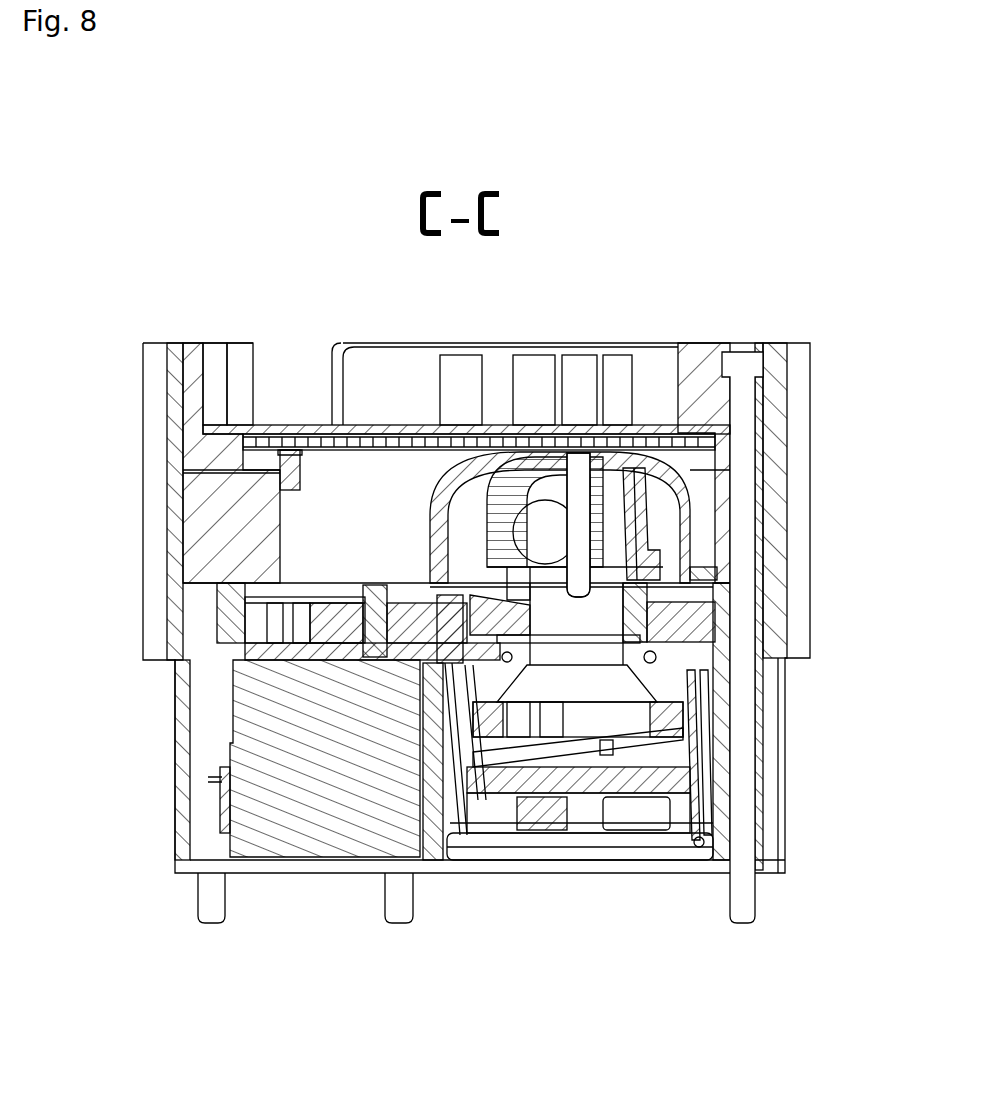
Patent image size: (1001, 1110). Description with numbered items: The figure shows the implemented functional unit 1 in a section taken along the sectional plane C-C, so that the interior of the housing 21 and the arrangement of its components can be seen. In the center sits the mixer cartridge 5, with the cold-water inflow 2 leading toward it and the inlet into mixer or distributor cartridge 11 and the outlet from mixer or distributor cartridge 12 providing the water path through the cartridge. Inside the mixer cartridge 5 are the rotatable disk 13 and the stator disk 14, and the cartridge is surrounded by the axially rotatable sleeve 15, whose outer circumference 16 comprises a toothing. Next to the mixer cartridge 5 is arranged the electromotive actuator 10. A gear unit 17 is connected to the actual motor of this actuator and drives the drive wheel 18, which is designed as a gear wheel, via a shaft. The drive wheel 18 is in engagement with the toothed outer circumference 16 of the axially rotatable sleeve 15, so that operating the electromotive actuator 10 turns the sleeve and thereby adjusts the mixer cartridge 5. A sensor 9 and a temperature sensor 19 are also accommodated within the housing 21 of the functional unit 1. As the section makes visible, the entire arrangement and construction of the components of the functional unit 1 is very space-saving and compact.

The functional unit 1 is at (275, 213).
The cold-water inflow 2 is at (637, 813).
The mixer cartridge 5 is at (573, 577).
The sensor 9 is at (578, 535).
The electromotive actuator 10 is at (300, 787).
The inlet into mixer or distributor cartridge 11 is at (573, 843).
The outlet from mixer or distributor cartridge 12 is at (548, 520).
The rotatable disk 13 is at (612, 741).
The stator disk 14 is at (655, 778).
The axially rotatable sleeve 15 is at (650, 676).
The outer circumference of axially rotatable sleeve 16 is at (670, 620).
The gear unit 17 is at (322, 688).
The drive wheel 18 is at (313, 623).
The temperature sensor 19 is at (578, 535).
The housing 21 is at (176, 345).